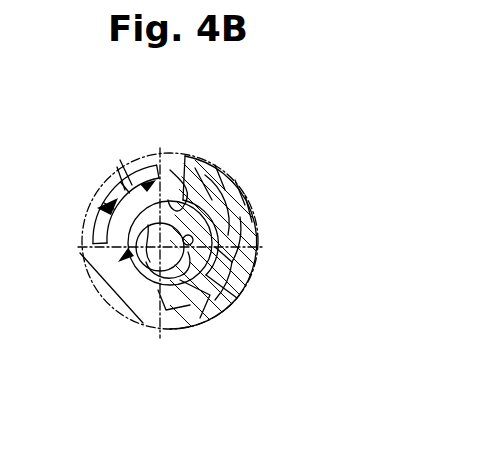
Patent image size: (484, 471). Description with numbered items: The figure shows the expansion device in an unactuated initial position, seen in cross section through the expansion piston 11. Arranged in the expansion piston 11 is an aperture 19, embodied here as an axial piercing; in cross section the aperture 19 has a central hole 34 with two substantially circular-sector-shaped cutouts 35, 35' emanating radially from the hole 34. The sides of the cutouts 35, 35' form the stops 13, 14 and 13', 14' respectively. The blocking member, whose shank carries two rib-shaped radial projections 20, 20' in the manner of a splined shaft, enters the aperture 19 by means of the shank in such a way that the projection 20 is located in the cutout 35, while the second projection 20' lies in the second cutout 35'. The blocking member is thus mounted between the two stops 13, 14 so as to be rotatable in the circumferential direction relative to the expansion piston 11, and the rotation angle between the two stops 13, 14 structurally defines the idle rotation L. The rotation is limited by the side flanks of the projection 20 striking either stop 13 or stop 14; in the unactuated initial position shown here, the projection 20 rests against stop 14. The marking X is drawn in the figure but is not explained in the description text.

The rotation axis X is at (100, 180).
The idle rotation L is at (118, 167).
The cutout 35 is at (85, 204).
The aperture 19 is at (125, 255).
The stop 13 is at (114, 280).
The hole 34 is at (145, 263).
The stop 14' is at (135, 321).
The stop 14 is at (226, 229).
The expansion piston 11 is at (205, 178).
The projection 20 is at (175, 144).
The stop 13' is at (276, 228).
The cutout 35' is at (270, 273).
The projection 20' is at (226, 322).